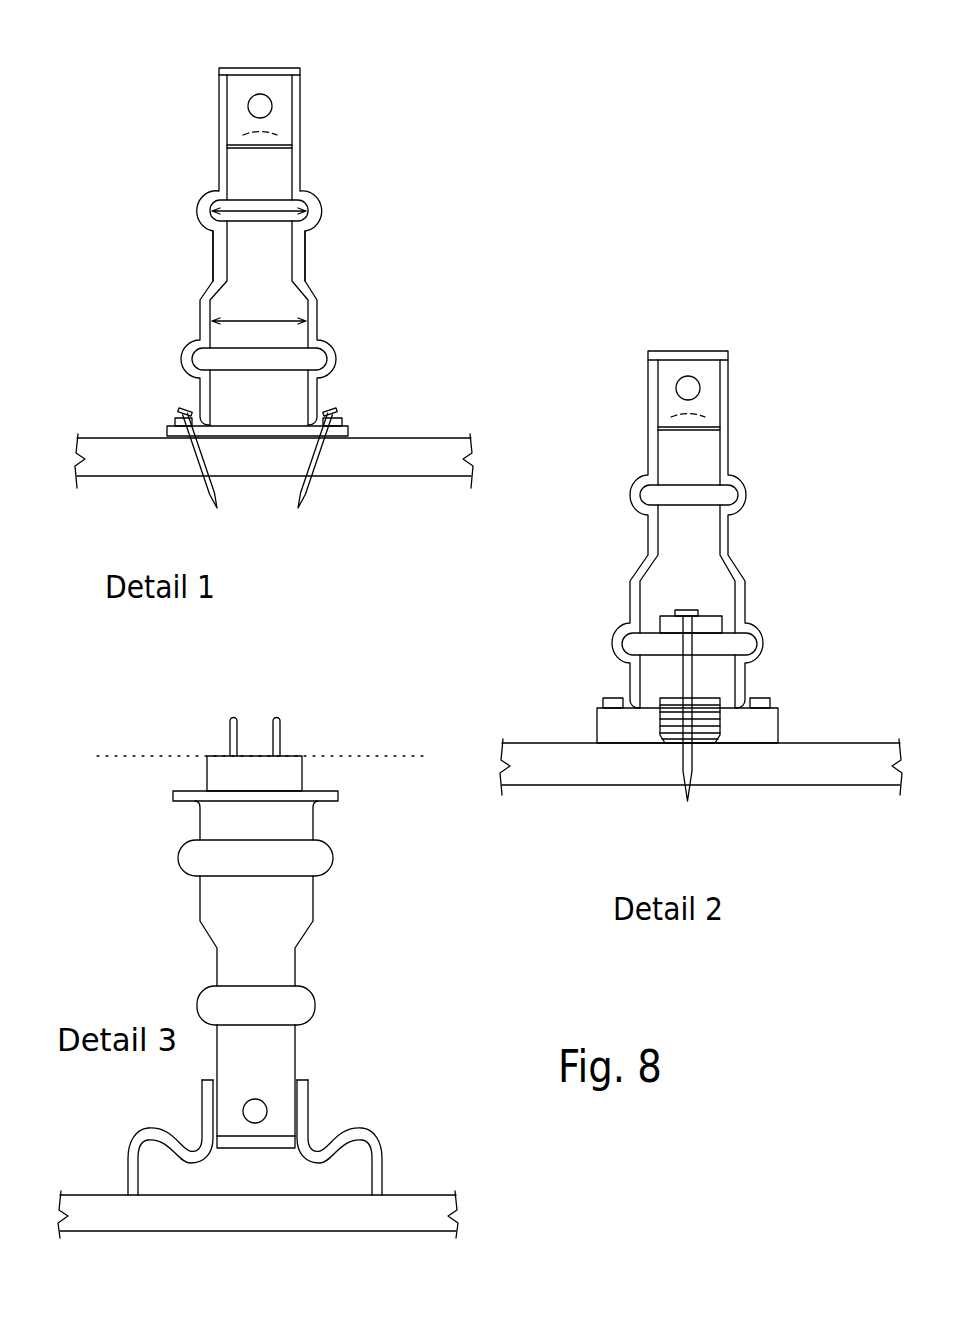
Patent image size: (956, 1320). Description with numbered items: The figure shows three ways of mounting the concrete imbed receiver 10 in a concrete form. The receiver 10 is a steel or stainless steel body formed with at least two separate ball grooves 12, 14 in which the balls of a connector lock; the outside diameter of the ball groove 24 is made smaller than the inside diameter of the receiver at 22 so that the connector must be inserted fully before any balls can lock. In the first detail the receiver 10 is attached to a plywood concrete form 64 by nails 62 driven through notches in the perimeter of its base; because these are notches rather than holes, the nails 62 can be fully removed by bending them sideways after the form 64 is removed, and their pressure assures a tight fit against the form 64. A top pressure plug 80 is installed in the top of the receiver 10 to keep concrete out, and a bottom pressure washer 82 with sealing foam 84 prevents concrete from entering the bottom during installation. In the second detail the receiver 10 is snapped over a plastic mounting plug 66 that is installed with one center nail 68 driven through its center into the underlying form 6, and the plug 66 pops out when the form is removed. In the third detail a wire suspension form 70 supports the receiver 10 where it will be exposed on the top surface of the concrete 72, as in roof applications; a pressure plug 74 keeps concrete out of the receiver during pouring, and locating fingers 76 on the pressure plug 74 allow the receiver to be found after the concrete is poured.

The roof substrate 6 is at (857, 787).
The concrete imbed receiver 10 is at (300, 168).
The ball groove 12 is at (316, 220).
The ball groove 14 is at (334, 375).
The inside diameter of the receiver 22 is at (207, 323).
The ball groove outside diameter 24 is at (200, 213).
The nails 62 is at (200, 488).
The concrete form 64 is at (428, 478).
The plastic mounting plug 66 is at (719, 742).
The center nail 68 is at (681, 677).
The wire suspension form 70 is at (381, 1170).
The top surface of the concrete 72 is at (350, 757).
The pressure plug 74 is at (257, 756).
The locating fingers 76 is at (226, 742).
The top pressure plug 80 is at (270, 69).
The bottom pressure washer 82 is at (273, 102).
The sealing foam 84 is at (348, 432).